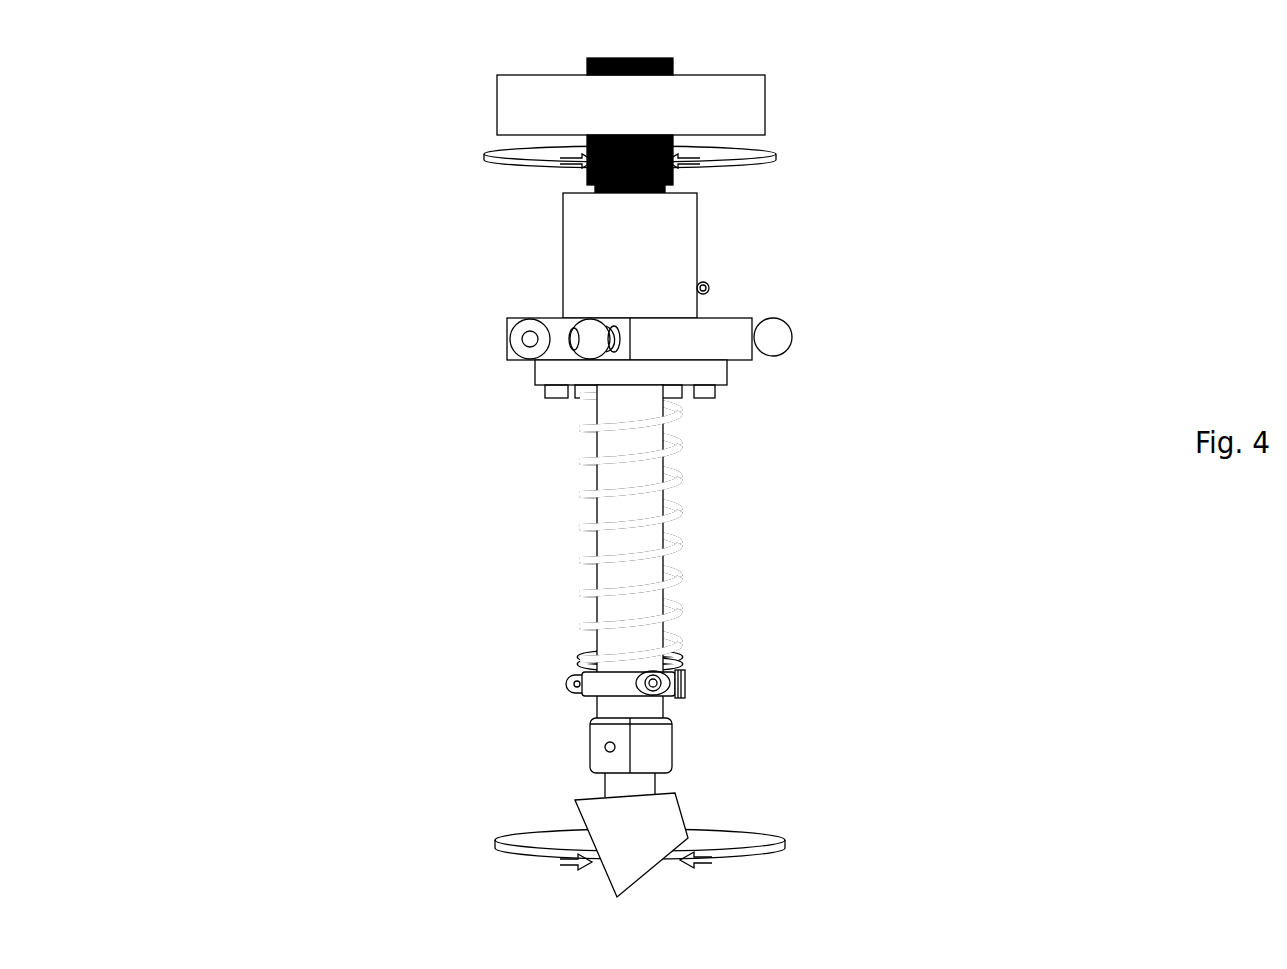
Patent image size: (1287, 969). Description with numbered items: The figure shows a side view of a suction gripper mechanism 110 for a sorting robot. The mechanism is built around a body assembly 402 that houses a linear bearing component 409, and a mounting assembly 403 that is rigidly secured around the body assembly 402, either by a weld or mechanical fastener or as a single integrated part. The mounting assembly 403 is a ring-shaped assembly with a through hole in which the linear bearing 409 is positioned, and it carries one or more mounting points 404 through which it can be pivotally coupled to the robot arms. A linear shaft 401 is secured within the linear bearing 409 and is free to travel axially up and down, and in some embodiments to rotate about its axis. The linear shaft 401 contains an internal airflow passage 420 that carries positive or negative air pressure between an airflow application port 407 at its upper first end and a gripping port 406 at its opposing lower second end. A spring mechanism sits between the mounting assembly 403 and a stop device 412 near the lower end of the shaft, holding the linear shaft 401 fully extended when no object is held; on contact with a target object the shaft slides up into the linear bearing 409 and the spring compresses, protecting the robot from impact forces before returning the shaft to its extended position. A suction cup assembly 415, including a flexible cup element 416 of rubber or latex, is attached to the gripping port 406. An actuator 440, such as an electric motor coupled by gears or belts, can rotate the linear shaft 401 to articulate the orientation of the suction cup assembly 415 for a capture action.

The suction gripper mechanism 110 is at (222, 353).
The linear shaft element 401 is at (580, 543).
The body assembly 402 is at (575, 256).
The mounting assembly 403 is at (742, 318).
The mounting points 404 is at (530, 349).
The gripping port 406 is at (607, 763).
The airflow application port 407 is at (673, 62).
The linear bearing component 409 is at (692, 184).
The stop device 412 is at (690, 683).
The suction cup assembly 415 is at (785, 792).
The flexible cup element 416 is at (680, 797).
The internal airflow passage 420 is at (639, 42).
The actuator 440 is at (497, 103).